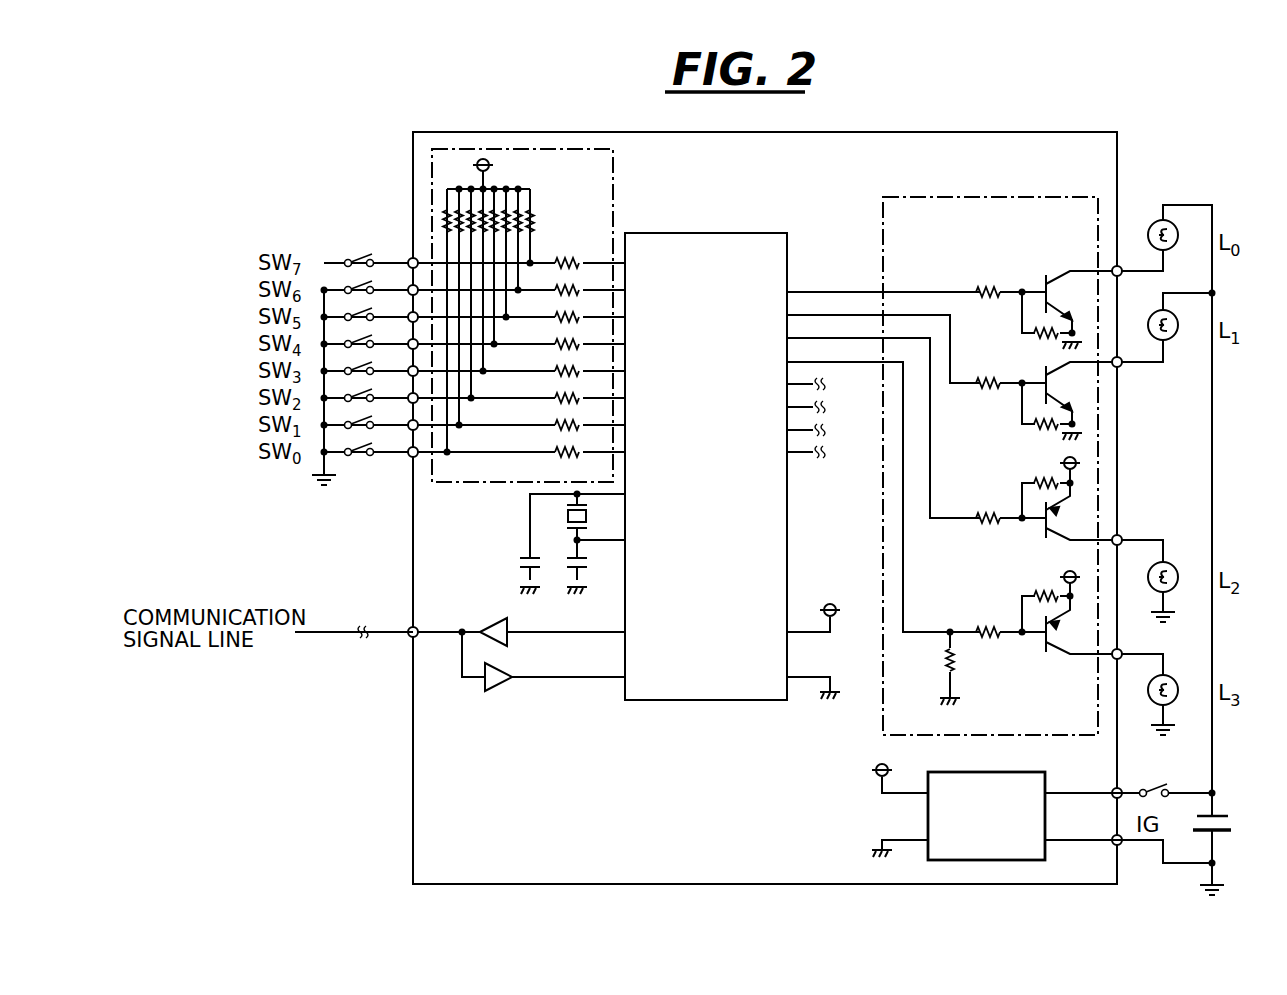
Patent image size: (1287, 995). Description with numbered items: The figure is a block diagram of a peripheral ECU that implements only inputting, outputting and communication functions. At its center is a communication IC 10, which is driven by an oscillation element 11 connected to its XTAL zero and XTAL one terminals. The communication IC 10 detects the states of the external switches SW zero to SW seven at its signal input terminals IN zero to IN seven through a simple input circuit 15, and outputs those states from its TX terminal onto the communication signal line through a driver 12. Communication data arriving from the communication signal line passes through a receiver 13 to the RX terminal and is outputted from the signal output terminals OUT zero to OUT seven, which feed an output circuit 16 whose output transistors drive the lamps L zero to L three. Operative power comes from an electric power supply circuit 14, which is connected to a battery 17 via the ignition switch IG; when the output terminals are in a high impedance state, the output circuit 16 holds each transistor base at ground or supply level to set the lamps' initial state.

The communication IC 10 is at (705, 233).
The oscillation element 11 is at (562, 517).
The driver 12 is at (499, 618).
The receiver 13 is at (493, 690).
The electric power supply circuit 14 is at (992, 860).
The input circuit 15 is at (520, 149).
The output circuit 16 is at (960, 197).
The battery 17 is at (1228, 828).